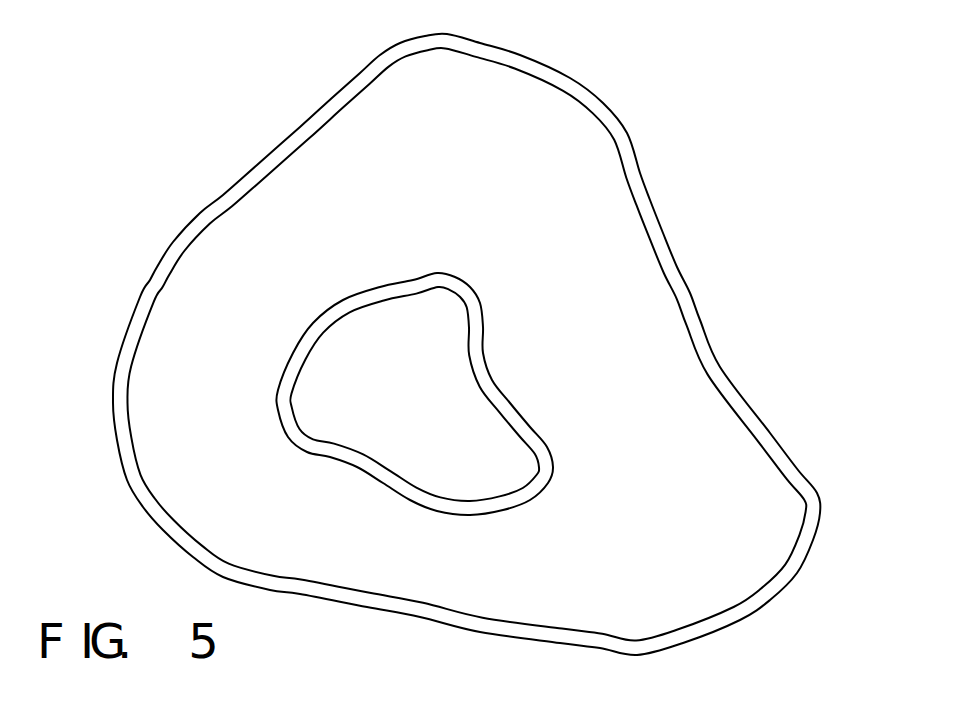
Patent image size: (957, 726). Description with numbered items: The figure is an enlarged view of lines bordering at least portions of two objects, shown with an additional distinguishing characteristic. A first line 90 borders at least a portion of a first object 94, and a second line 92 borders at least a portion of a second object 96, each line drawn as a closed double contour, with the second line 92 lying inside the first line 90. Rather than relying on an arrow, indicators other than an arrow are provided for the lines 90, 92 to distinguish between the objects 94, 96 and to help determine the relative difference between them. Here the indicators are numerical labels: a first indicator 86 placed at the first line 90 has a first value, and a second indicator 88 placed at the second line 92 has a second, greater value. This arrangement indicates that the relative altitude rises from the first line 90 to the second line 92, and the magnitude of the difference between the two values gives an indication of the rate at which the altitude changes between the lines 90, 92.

The object 94 is at (793, 602).
The first line 90 is at (330, 592).
The second line 92 is at (346, 308).
The object 96 is at (428, 253).
The second indicator 88 is at (483, 453).
The first indicator 86 is at (727, 548).